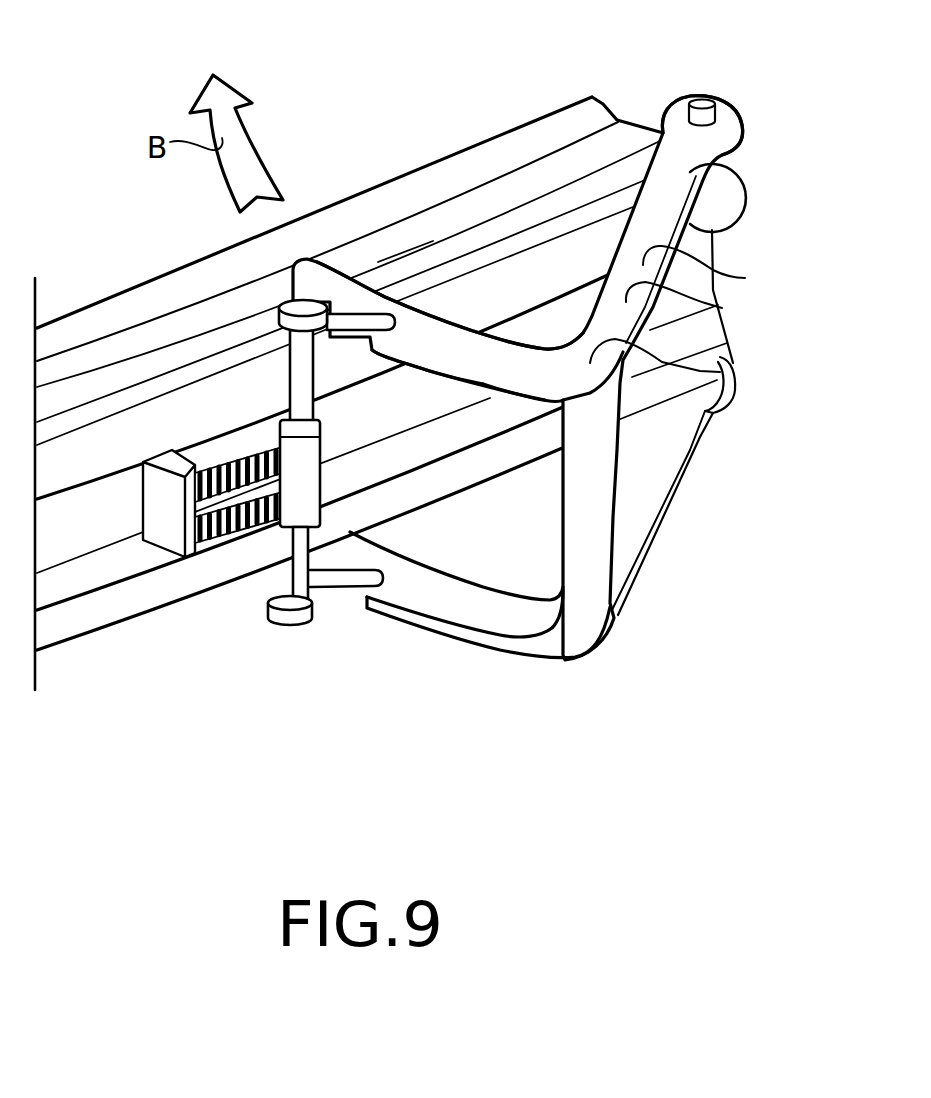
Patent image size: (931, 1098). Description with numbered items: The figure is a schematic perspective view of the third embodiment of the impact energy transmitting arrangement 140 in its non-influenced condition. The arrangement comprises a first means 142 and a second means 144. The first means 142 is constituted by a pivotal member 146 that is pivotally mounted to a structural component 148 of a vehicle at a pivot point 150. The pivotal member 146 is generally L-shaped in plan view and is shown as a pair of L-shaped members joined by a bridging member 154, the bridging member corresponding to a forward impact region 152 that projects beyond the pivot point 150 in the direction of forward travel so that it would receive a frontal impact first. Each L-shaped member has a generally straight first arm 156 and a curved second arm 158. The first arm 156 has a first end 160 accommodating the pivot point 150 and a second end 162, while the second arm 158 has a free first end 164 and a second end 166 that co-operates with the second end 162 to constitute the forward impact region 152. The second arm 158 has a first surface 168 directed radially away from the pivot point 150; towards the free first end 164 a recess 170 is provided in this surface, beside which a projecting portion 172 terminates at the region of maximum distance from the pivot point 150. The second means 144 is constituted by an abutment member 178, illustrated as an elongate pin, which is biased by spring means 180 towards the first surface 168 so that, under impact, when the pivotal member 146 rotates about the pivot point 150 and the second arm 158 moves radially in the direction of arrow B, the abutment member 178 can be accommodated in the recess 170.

The impact energy transmitting arrangement 140 is at (427, 648).
The first means 142 is at (704, 203).
The second means 144 is at (276, 319).
The pivotal member 146 is at (745, 278).
The structural component 148 is at (510, 153).
The pivot point 150 is at (701, 99).
The forward impact region 152 is at (561, 489).
The bridging member 154 is at (590, 550).
The first arm 156 is at (718, 304).
The second arm 158 is at (437, 336).
The first end of the first arm 160 is at (738, 118).
The second end of the first arm 162 is at (703, 417).
The free first end of the second arm 164 is at (304, 287).
The second end of the second arm 166 is at (540, 372).
The first surface 168 is at (427, 368).
The recess 170 is at (349, 263).
The projecting portion 172 is at (371, 321).
The abutment member 178 is at (297, 385).
The spring means 180 is at (243, 540).